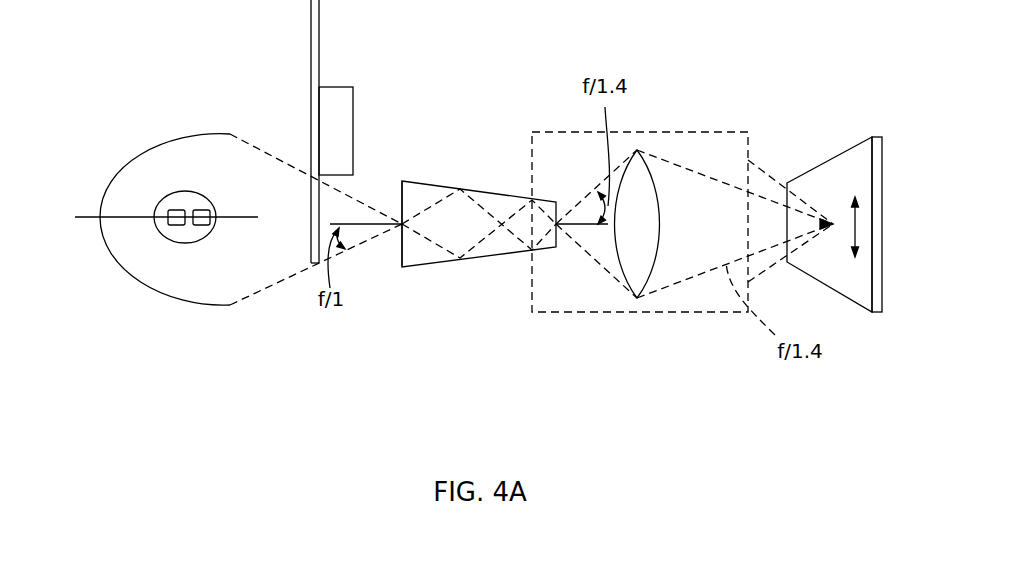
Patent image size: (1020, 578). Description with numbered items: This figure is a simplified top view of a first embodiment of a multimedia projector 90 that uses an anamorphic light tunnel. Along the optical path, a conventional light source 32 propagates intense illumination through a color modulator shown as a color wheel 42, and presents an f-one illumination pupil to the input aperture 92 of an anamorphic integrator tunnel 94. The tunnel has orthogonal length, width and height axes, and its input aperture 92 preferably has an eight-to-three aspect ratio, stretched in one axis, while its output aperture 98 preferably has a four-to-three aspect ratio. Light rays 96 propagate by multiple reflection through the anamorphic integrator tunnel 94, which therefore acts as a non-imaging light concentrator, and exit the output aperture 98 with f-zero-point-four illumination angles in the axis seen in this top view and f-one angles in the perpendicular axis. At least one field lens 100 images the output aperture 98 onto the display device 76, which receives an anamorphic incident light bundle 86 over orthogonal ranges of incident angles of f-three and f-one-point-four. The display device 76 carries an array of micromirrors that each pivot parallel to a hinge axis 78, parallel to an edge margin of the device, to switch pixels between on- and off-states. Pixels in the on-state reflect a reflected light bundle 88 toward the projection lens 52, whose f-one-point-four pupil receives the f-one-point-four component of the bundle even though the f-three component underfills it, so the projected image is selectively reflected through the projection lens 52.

The light source 32 is at (154, 106).
The color wheel 42 is at (358, 66).
The input aperture 92 is at (402, 186).
The anamorphic integrator tunnel 94 is at (472, 192).
The light rays 96 is at (258, 292).
The output aperture 98 is at (564, 230).
The projection lens 52 is at (683, 132).
The field lens 100 is at (642, 204).
The anamorphic incident light bundle 86 is at (688, 277).
The reflected light bundle 88 is at (768, 178).
The display device 76 is at (855, 162).
The hinge axis 78 is at (855, 238).
The multimedia projector 90 is at (161, 386).